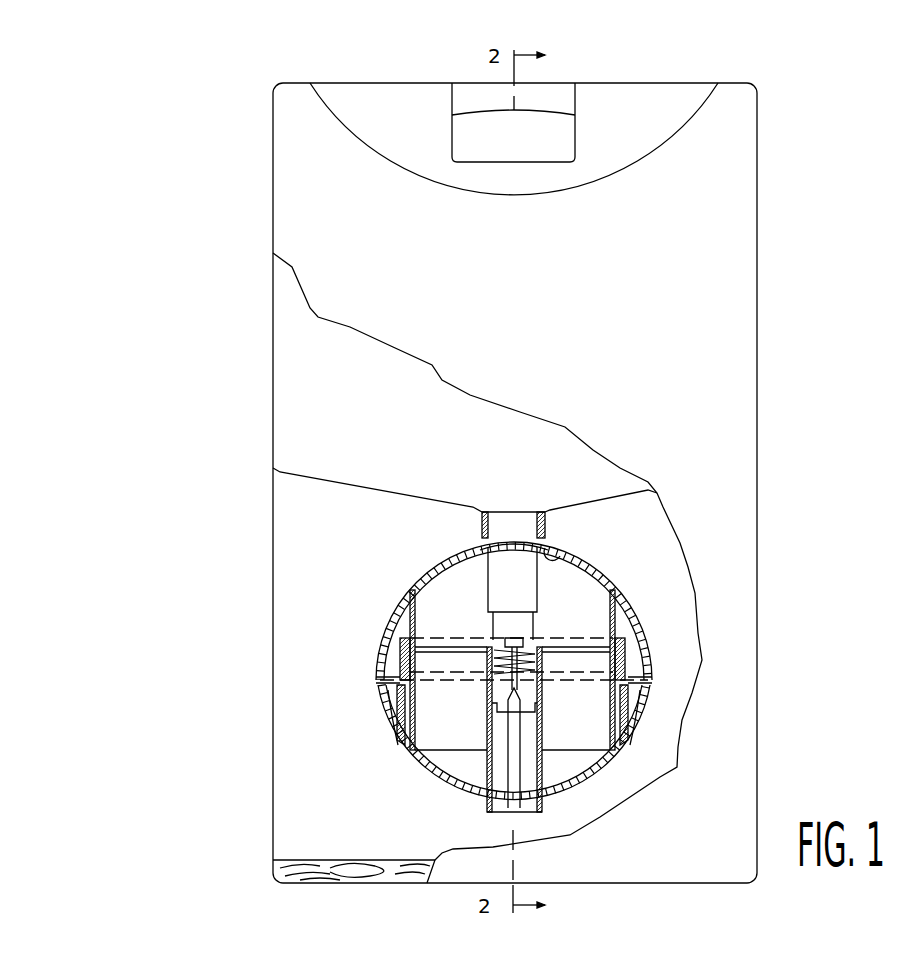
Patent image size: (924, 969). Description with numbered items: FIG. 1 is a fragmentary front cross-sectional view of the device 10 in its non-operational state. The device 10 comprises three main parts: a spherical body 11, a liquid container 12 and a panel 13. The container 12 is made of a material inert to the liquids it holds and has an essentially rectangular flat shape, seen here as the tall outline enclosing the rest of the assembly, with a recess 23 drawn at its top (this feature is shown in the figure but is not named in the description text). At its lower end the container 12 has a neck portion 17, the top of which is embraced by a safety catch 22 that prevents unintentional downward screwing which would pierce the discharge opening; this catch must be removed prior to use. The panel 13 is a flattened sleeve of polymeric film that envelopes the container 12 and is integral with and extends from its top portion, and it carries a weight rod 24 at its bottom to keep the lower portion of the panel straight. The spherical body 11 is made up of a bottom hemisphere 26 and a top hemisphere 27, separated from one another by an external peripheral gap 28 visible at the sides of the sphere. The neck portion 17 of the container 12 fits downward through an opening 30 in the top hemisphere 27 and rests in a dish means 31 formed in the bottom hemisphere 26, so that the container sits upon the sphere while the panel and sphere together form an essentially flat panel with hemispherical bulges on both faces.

The device 10 is at (262, 477).
The spherical body 11 is at (368, 637).
The liquid container 12 is at (745, 275).
The panel 13 is at (745, 571).
The neck portion 17 is at (525, 627).
The safety catch 22 is at (480, 518).
The top recess 23 is at (665, 143).
The weight rod 24 is at (330, 875).
The bottom hemisphere 26 is at (425, 782).
The top hemisphere 27 is at (610, 576).
The external peripheral gap 28 is at (645, 690).
The opening 30 is at (575, 547).
The dish means 31 is at (632, 705).